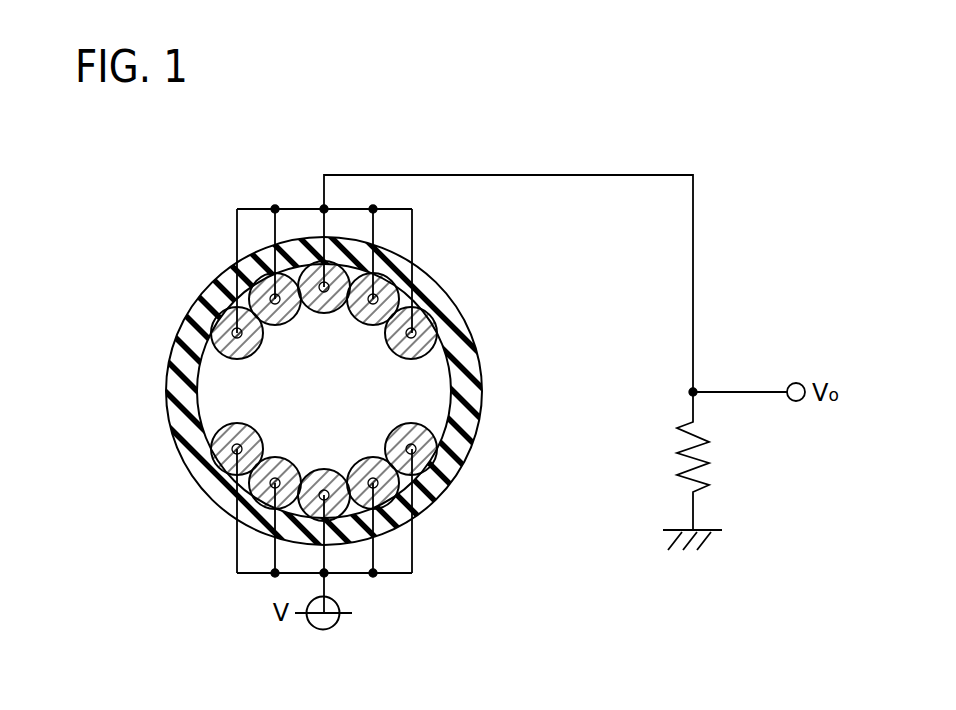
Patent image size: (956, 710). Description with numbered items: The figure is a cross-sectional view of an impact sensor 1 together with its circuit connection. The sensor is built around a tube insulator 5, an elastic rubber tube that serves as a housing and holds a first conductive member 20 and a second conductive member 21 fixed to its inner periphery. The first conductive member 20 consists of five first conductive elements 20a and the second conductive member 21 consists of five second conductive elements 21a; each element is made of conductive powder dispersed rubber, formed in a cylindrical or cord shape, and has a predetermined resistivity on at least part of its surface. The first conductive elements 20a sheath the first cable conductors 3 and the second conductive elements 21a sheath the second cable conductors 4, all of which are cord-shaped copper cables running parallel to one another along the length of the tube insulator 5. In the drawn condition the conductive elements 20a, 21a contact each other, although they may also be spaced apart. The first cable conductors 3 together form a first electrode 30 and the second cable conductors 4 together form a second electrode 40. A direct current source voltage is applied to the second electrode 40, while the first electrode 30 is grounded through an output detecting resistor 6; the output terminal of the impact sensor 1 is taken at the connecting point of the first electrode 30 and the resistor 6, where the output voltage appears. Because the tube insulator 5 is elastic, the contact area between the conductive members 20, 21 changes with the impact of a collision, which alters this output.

The impact sensor 1 is at (190, 510).
The first cable conductors 3 is at (227, 332).
The second cable conductors 4 is at (227, 467).
The tube insulator 5 is at (463, 427).
The output detecting resistor 6 is at (679, 467).
The first conductive member 20 is at (215, 358).
The first conductive elements 20a is at (223, 342).
The second conductive member 21 is at (433, 427).
The second conductive elements 21a is at (227, 448).
The first electrode 30 is at (303, 195).
The second electrode 40 is at (350, 583).